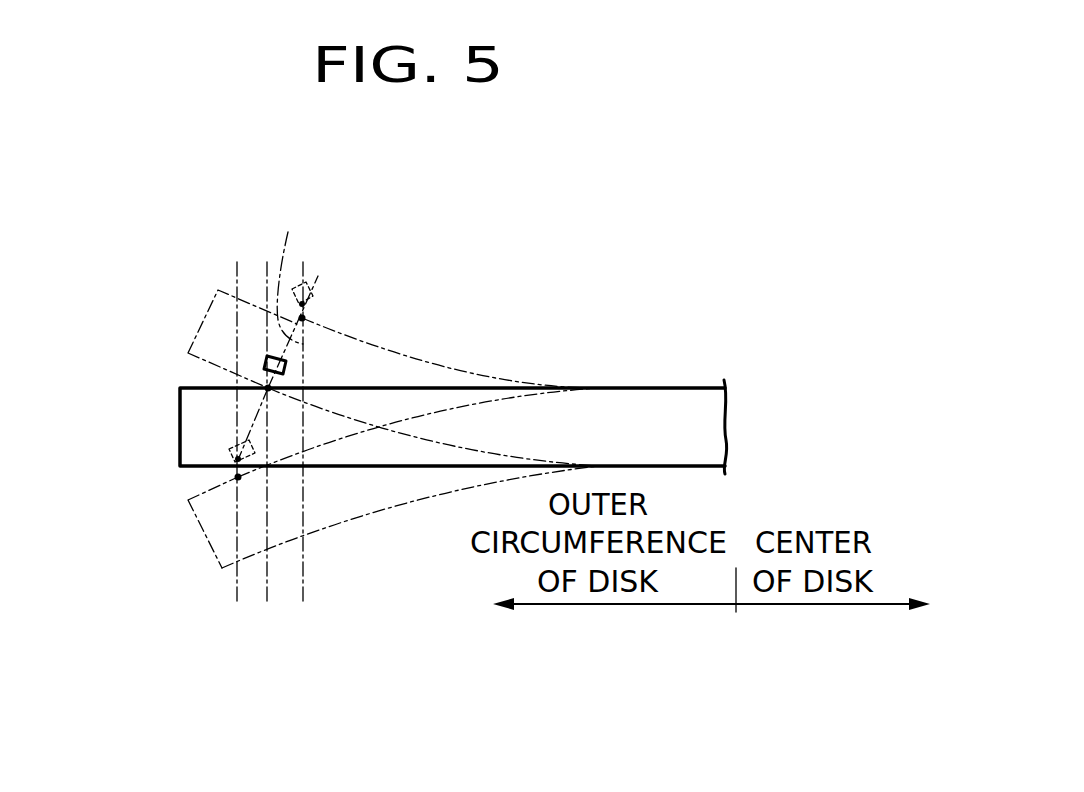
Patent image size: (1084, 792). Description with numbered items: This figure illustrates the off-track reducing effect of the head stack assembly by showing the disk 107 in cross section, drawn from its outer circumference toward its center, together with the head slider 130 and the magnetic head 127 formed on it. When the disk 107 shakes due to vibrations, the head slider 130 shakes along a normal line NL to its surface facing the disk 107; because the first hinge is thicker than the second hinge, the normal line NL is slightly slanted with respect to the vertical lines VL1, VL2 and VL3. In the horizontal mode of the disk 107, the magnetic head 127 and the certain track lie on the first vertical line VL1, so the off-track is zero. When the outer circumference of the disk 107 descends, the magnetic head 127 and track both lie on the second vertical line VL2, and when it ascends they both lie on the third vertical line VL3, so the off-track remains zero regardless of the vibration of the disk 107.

The disk 107 is at (182, 432).
The head slider 130 is at (268, 356).
The magnetic head 127 is at (262, 386).
The normal line NL is at (285, 271).
The first vertical line VL1 is at (267, 606).
The second vertical line VL2 is at (237, 606).
The third vertical line VL3 is at (303, 606).